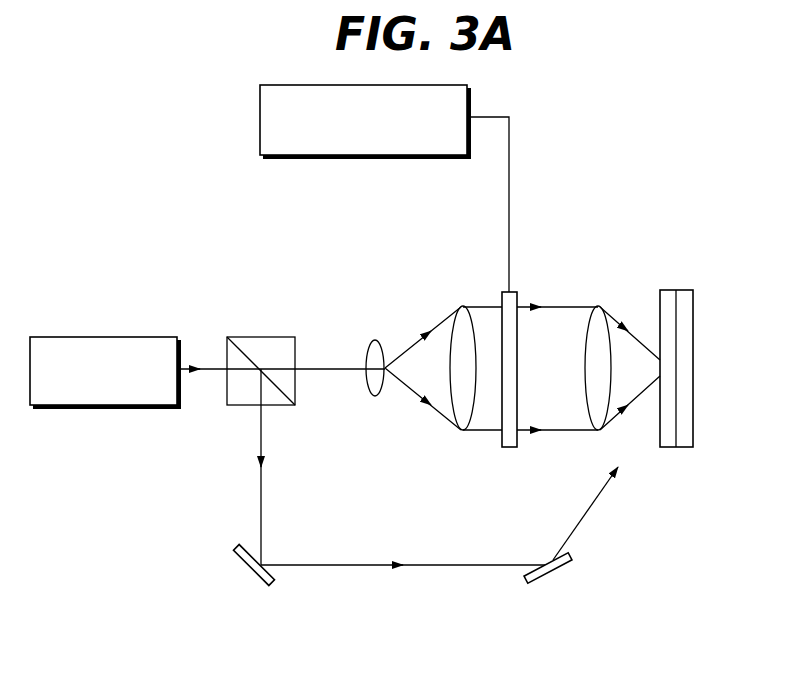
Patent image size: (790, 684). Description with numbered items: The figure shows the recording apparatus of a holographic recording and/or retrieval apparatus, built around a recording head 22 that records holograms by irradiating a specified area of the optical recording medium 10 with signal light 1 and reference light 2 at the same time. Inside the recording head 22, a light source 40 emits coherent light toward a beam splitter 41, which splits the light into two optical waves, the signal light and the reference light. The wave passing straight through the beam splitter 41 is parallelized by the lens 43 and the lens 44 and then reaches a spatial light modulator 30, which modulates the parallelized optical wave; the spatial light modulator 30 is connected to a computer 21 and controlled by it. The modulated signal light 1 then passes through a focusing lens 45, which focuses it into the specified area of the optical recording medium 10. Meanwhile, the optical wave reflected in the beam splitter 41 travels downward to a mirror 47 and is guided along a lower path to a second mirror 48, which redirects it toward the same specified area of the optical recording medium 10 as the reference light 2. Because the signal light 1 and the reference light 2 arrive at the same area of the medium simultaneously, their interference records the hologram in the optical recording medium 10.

The signal light 1 is at (577, 300).
The reference light 2 is at (354, 565).
The optical recording medium 10 is at (673, 448).
The computer 21 is at (390, 158).
The recording head 22 is at (559, 165).
The spatial light modulator 30 is at (507, 448).
The light source 40 is at (145, 408).
The beam splitter 41 is at (263, 337).
The lens 43 is at (372, 342).
The lens 44 is at (462, 310).
The focusing lens 45 is at (606, 306).
The mirror 47 is at (247, 573).
The mirror 48 is at (546, 576).